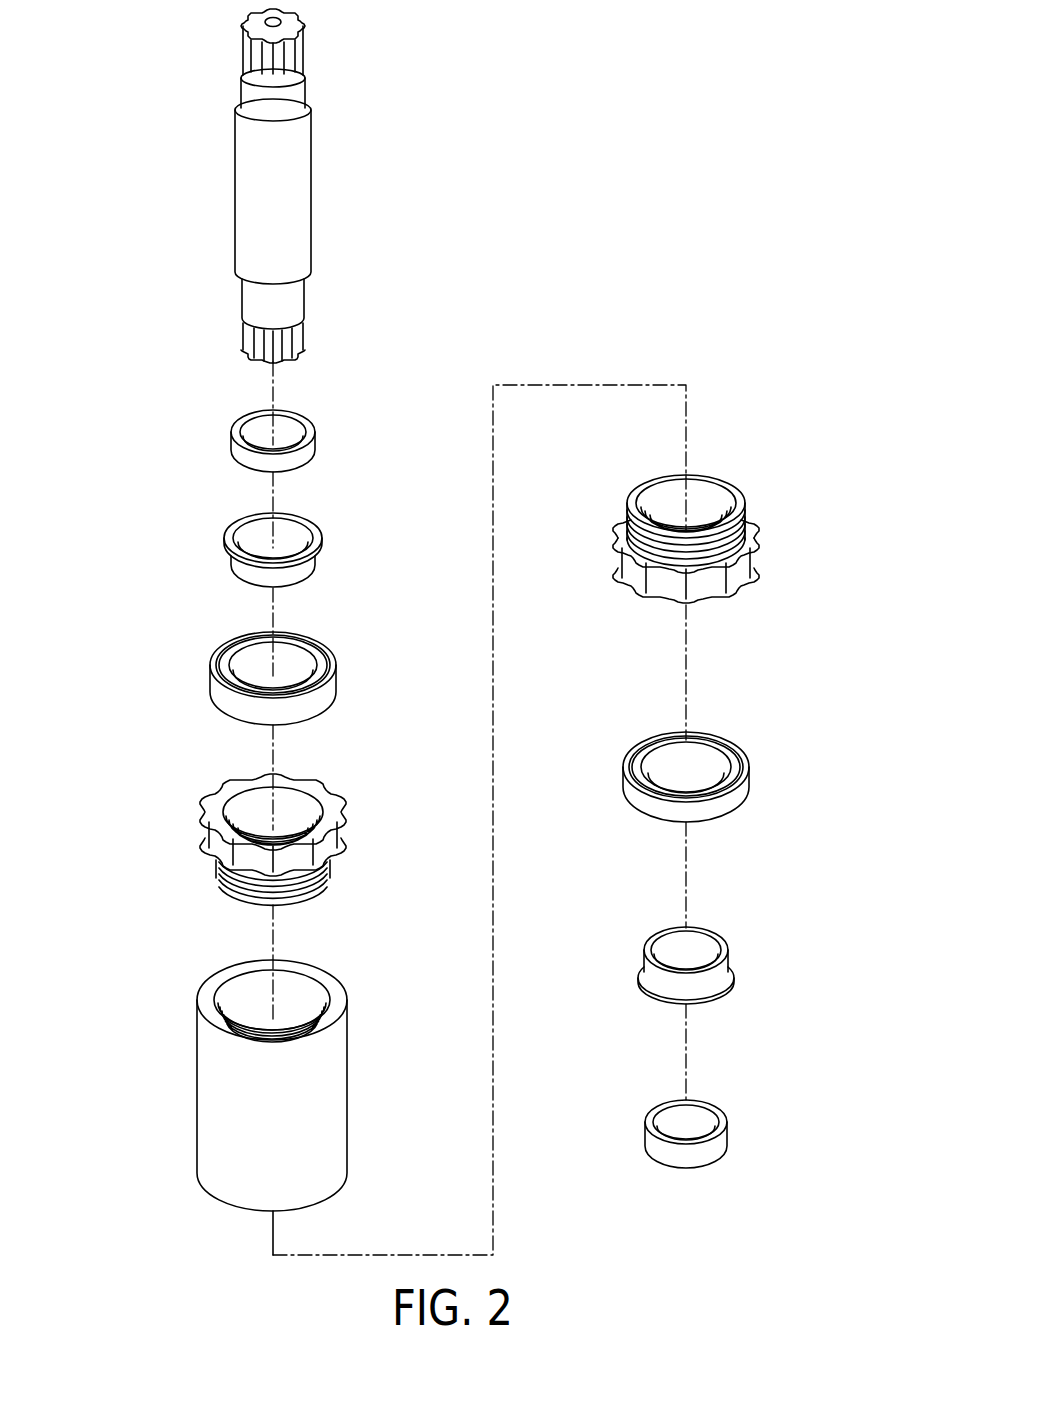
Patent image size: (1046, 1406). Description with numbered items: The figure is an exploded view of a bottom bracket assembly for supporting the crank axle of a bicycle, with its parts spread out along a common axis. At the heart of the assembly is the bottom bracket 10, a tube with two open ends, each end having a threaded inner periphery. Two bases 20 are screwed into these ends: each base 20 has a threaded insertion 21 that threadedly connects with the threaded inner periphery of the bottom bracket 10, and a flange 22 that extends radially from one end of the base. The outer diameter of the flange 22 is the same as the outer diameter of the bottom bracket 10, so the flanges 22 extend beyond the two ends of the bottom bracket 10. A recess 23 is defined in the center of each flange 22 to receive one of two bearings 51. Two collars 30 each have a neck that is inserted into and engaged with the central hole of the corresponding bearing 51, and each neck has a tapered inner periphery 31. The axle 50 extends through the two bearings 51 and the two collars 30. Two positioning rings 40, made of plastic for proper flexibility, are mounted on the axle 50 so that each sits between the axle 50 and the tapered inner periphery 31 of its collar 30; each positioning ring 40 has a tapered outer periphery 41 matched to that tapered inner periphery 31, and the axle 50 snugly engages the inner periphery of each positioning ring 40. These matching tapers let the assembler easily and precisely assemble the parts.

The bottom bracket 10 is at (193, 1078).
The base 20 is at (497, 690).
The threaded insertion 21 is at (223, 875).
The flange 22 is at (205, 838).
The recess 23 is at (228, 808).
The collar 30 is at (484, 744).
The tapered inner periphery 31 is at (253, 532).
The positioning ring 40 is at (481, 769).
The tapered outer periphery 41 is at (248, 460).
The axle 50 is at (232, 180).
The bearing 51 is at (230, 697).